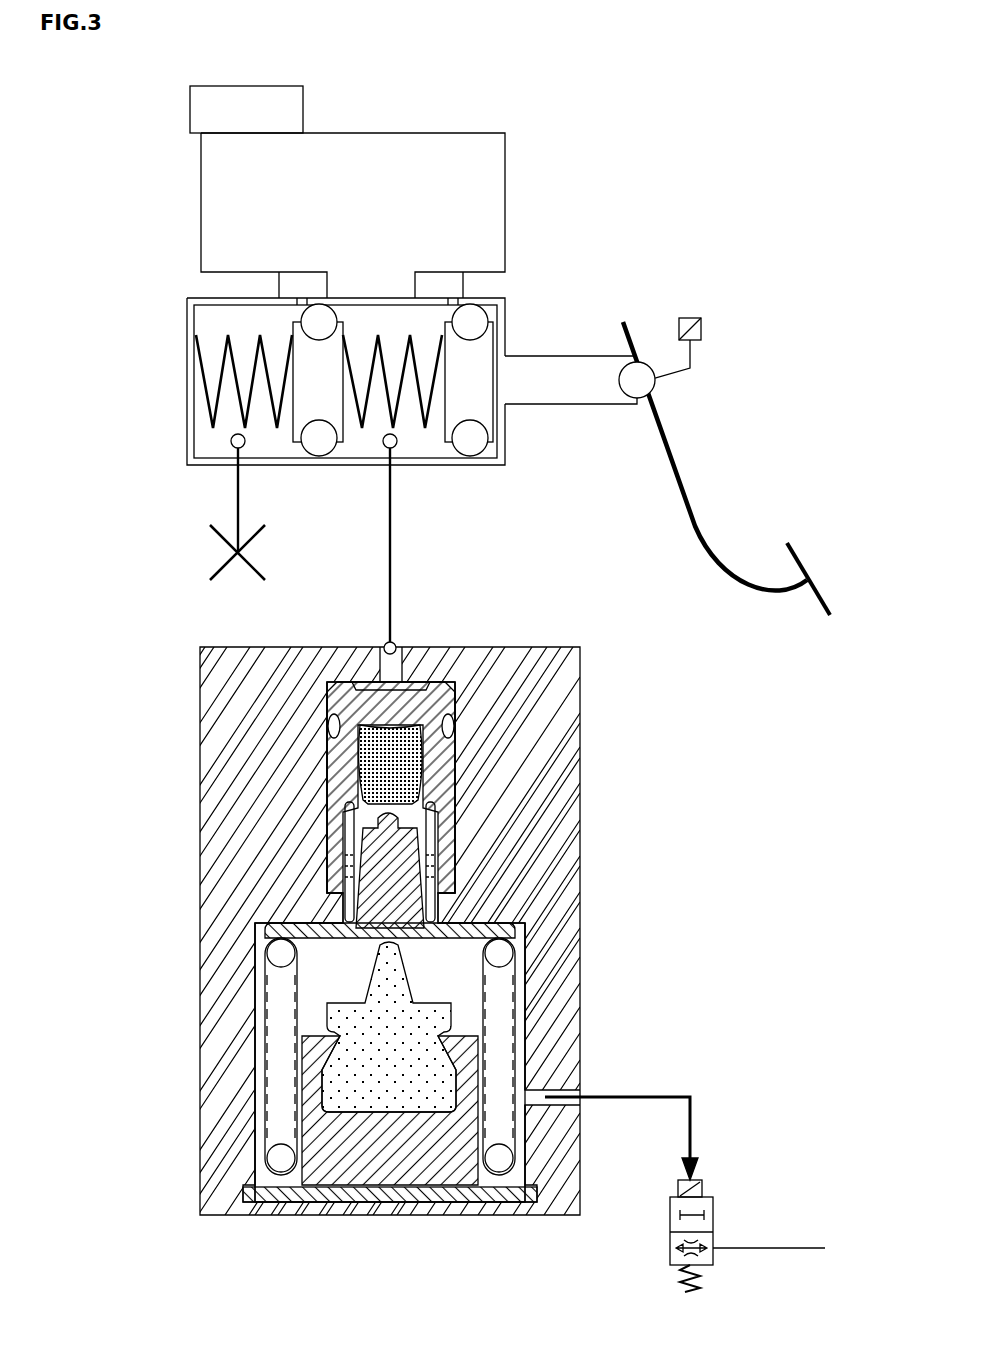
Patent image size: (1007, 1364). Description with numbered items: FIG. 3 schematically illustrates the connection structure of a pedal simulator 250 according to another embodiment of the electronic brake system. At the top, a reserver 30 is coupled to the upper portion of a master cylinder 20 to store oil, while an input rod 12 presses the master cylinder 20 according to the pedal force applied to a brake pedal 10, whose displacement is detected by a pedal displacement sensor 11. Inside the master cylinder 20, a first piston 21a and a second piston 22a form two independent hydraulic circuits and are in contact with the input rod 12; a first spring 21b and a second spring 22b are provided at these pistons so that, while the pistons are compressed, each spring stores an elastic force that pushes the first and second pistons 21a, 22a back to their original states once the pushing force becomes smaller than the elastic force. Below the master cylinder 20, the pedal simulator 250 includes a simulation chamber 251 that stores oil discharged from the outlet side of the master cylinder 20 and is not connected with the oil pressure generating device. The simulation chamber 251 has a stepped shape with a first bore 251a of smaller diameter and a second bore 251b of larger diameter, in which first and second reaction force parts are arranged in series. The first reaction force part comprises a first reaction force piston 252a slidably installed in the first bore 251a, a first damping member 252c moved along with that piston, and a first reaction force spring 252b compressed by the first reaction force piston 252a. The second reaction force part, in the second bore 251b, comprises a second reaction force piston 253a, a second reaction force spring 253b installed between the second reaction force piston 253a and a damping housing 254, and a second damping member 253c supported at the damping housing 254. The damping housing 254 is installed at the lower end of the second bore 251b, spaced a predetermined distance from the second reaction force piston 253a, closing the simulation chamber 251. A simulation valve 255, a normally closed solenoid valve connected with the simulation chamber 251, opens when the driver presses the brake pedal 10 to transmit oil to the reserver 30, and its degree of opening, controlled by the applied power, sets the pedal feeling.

The brake pedal 10 is at (672, 470).
The pedal displacement sensor 11 is at (690, 318).
The input rod 12 is at (558, 392).
The master cylinder 20 is at (187, 340).
The first piston 21a is at (505, 340).
The first spring 21b is at (405, 445).
The second piston 22a is at (297, 410).
The second spring 22b is at (207, 410).
The reserver 30 is at (505, 203).
The pedal simulator 250 is at (617, 652).
The simulation chamber 251 is at (128, 880).
The first bore 251a is at (323, 878).
The second bore 251b is at (265, 976).
The first reaction force piston 252a is at (345, 757).
The first reaction force spring 252b is at (380, 827).
The first damping member 252c is at (357, 780).
The second reaction force piston 253a is at (400, 903).
The second reaction force spring 253b is at (500, 950).
The second damping member 253c is at (430, 1058).
The damping housing 254 is at (315, 1125).
The simulation valve 255 is at (716, 1223).